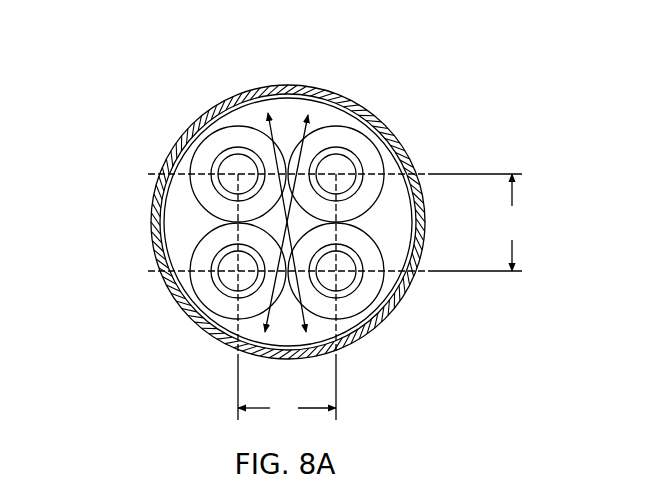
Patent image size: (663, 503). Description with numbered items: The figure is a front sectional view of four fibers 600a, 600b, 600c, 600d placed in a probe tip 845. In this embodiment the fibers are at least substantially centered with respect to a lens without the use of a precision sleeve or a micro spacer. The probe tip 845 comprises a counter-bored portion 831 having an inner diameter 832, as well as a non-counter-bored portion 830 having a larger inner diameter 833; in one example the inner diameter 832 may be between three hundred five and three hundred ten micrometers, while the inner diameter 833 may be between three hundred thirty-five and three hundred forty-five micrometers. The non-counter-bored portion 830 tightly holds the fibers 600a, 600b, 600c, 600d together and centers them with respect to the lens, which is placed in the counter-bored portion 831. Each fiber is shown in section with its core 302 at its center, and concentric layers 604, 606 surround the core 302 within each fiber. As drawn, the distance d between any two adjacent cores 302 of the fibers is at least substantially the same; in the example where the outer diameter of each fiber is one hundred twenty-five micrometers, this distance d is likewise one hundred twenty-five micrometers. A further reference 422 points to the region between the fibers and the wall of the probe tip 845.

The core 302 is at (220, 176).
The interstitial space 422 is at (400, 224).
The fiber 600a is at (184, 126).
The fiber 600b is at (358, 108).
The fiber 600c is at (350, 333).
The fiber 600d is at (225, 333).
The tube outer layer 604 is at (215, 145).
The tube wall 606 is at (212, 157).
The non-counter-bored portion 830 is at (157, 232).
The counter-bored portion 831 is at (155, 258).
The inner diameter 832 is at (270, 122).
The inner diameter 833 is at (310, 130).
The probe tip 845 is at (152, 218).